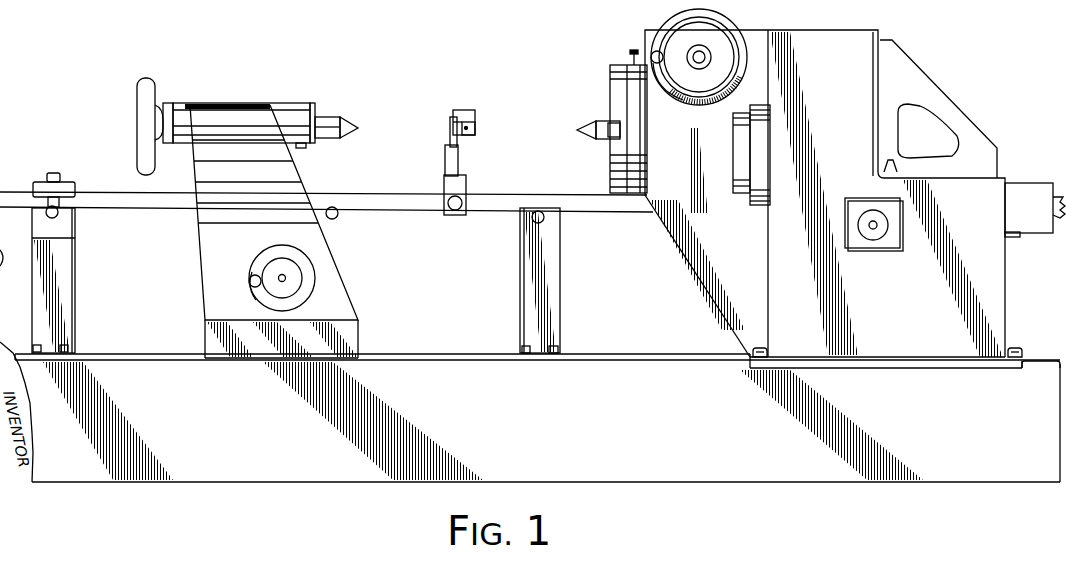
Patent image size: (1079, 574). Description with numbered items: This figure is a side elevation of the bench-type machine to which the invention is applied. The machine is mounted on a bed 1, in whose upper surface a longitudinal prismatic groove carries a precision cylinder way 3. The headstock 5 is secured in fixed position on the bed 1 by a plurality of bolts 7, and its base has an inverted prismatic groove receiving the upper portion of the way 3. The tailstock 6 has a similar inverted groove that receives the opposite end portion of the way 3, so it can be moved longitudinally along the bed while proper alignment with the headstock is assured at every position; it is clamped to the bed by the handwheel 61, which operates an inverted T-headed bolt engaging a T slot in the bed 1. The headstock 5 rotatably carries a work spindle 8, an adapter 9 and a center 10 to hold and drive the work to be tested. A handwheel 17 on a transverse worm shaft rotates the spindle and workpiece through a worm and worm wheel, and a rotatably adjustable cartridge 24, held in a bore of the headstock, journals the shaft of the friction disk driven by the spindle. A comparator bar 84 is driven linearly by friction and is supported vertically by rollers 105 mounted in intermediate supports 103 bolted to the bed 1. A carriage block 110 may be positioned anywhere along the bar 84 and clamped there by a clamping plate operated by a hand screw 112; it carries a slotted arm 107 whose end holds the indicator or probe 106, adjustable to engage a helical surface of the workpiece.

The bed 1 is at (675, 483).
The precision cylinder way 3 is at (624, 353).
The headstock 5 is at (734, 322).
The tailstock 6 is at (234, 102).
The handwheel 61 is at (316, 284).
The bolts 7 is at (760, 351).
The work spindle 8 is at (633, 50).
The adapter 9 is at (612, 71).
The center 10 is at (597, 125).
The handwheel 17 is at (682, 100).
The cartridge 24 is at (745, 152).
The comparator bar 84 is at (527, 198).
The intermediate supports 103 is at (559, 272).
The rollers 105 is at (339, 214).
The indicator or probe 106 is at (472, 128).
The arm 107 is at (452, 113).
The carriage block 110 is at (451, 136).
The hand screw 112 is at (471, 221).